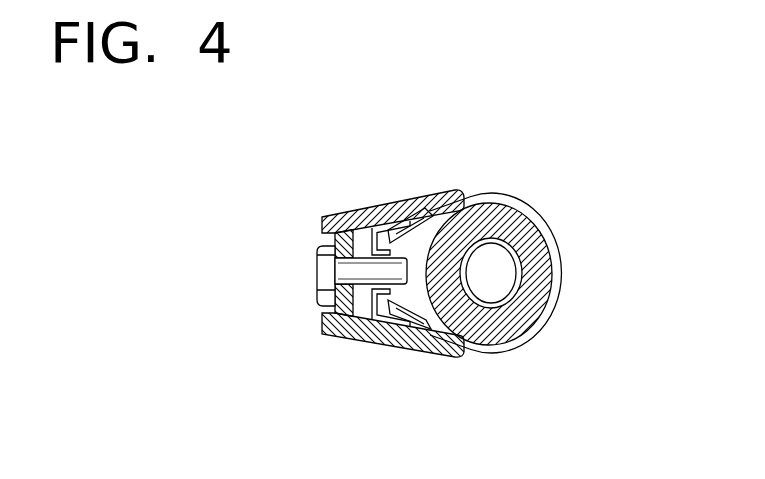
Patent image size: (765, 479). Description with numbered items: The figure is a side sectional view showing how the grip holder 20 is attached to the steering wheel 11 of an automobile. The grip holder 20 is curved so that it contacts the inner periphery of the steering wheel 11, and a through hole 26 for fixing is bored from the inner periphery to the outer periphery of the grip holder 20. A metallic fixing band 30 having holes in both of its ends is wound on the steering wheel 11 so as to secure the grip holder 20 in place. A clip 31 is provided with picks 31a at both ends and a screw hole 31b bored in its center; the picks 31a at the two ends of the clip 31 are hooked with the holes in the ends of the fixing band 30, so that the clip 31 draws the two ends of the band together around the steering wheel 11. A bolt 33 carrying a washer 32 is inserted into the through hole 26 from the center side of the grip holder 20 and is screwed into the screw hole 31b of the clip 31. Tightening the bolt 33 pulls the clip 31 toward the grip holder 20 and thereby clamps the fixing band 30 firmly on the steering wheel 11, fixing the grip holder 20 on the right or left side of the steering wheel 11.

The steering wheel 11 is at (540, 312).
The grip holder 20 is at (407, 193).
The through hole 26 is at (338, 341).
The fixing band 30 is at (432, 212).
The clip 31 is at (363, 302).
The pick 31a is at (380, 228).
The screw hole 31b is at (337, 250).
The washer 32 is at (318, 255).
The bolt 33 is at (318, 290).